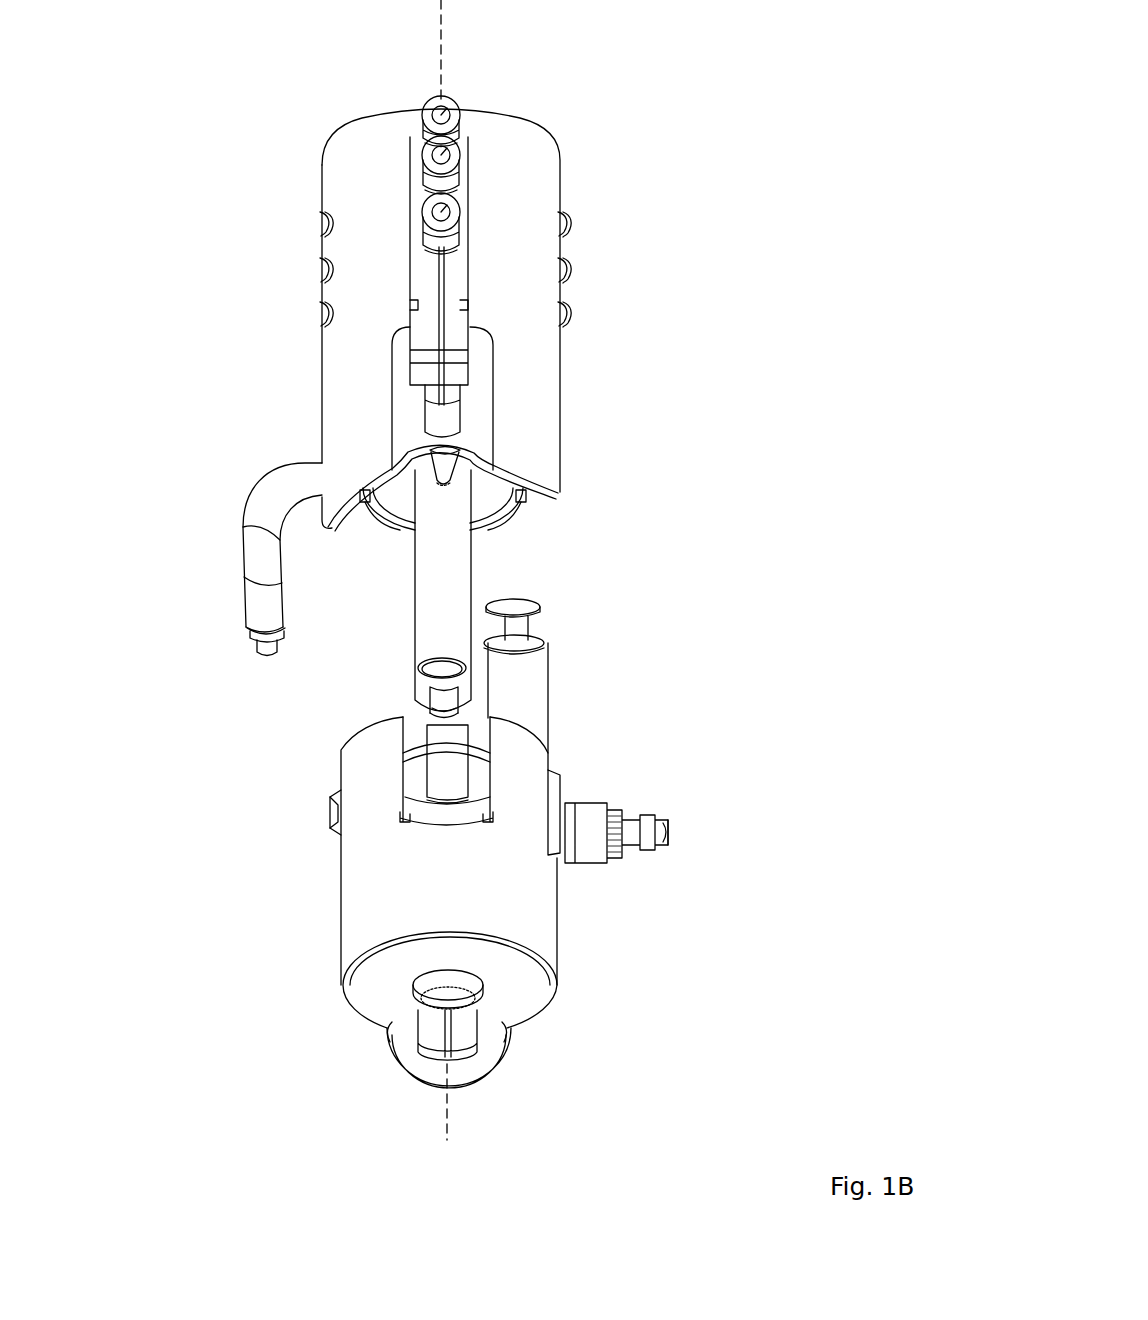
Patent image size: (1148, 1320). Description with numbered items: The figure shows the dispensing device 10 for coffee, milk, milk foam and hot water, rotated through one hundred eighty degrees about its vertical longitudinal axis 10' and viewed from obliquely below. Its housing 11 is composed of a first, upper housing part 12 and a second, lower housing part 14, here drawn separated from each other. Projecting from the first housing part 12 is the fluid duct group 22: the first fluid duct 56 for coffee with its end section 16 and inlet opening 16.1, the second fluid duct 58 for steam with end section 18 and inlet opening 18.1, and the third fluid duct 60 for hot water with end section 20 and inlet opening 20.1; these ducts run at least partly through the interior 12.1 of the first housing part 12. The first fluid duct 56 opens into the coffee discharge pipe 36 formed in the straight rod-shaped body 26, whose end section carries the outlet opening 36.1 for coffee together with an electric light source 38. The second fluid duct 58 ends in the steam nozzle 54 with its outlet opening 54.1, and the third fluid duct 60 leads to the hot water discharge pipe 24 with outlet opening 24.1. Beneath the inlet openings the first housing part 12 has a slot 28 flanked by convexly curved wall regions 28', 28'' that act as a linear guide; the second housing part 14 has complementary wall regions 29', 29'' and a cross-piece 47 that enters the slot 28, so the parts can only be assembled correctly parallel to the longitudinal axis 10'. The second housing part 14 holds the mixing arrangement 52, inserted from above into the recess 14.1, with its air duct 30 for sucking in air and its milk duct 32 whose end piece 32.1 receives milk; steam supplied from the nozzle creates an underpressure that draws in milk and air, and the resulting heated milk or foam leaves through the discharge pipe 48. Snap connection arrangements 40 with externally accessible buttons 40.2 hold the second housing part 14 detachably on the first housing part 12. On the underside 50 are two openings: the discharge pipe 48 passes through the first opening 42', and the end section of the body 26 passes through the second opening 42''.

The dispensing device 10 is at (737, 82).
The longitudinal axis 10' is at (475, 578).
The housing 11 is at (580, 310).
The first housing part 12 is at (562, 285).
The interior 12.1 is at (386, 515).
The second housing part 14 is at (530, 933).
The recess 14.1 is at (409, 716).
The end section 16 is at (422, 115).
The inlet opening 16.1 is at (430, 130).
The end section 18 is at (423, 157).
The inlet opening 18.1 is at (430, 173).
The end section 20 is at (423, 214).
The inlet opening 20.1 is at (430, 232).
The fluid duct group 22 is at (178, 105).
The hot water discharge pipe 24 is at (256, 636).
The outlet opening 24.1 is at (262, 656).
The rod-shaped body 26 is at (457, 560).
The slot 28 is at (524, 287).
The wall region 28' is at (434, 444).
The wall region 28'' is at (436, 479).
The wall region 29' is at (445, 774).
The wall region 29'' is at (449, 733).
The air duct 30 is at (545, 690).
The milk duct 32 is at (681, 848).
The end piece 32.1 is at (663, 822).
The coffee discharge pipe 36 is at (435, 697).
The outlet opening 36.1 is at (440, 712).
The electric light source 38 is at (437, 666).
The snap connection arrangement 40 is at (323, 796).
The button 40.2 is at (332, 817).
The first opening 42' is at (348, 1023).
The second opening 42'' is at (360, 1067).
The cross-piece 47 is at (440, 790).
The discharge pipe 48 is at (483, 994).
The underside 50 is at (492, 1013).
The mixing arrangement 52 is at (586, 792).
The steam nozzle 54 is at (443, 463).
The outlet opening 54.1 is at (443, 487).
The first fluid duct 56 is at (477, 126).
The second fluid duct 58 is at (479, 173).
The third fluid duct 60 is at (479, 233).